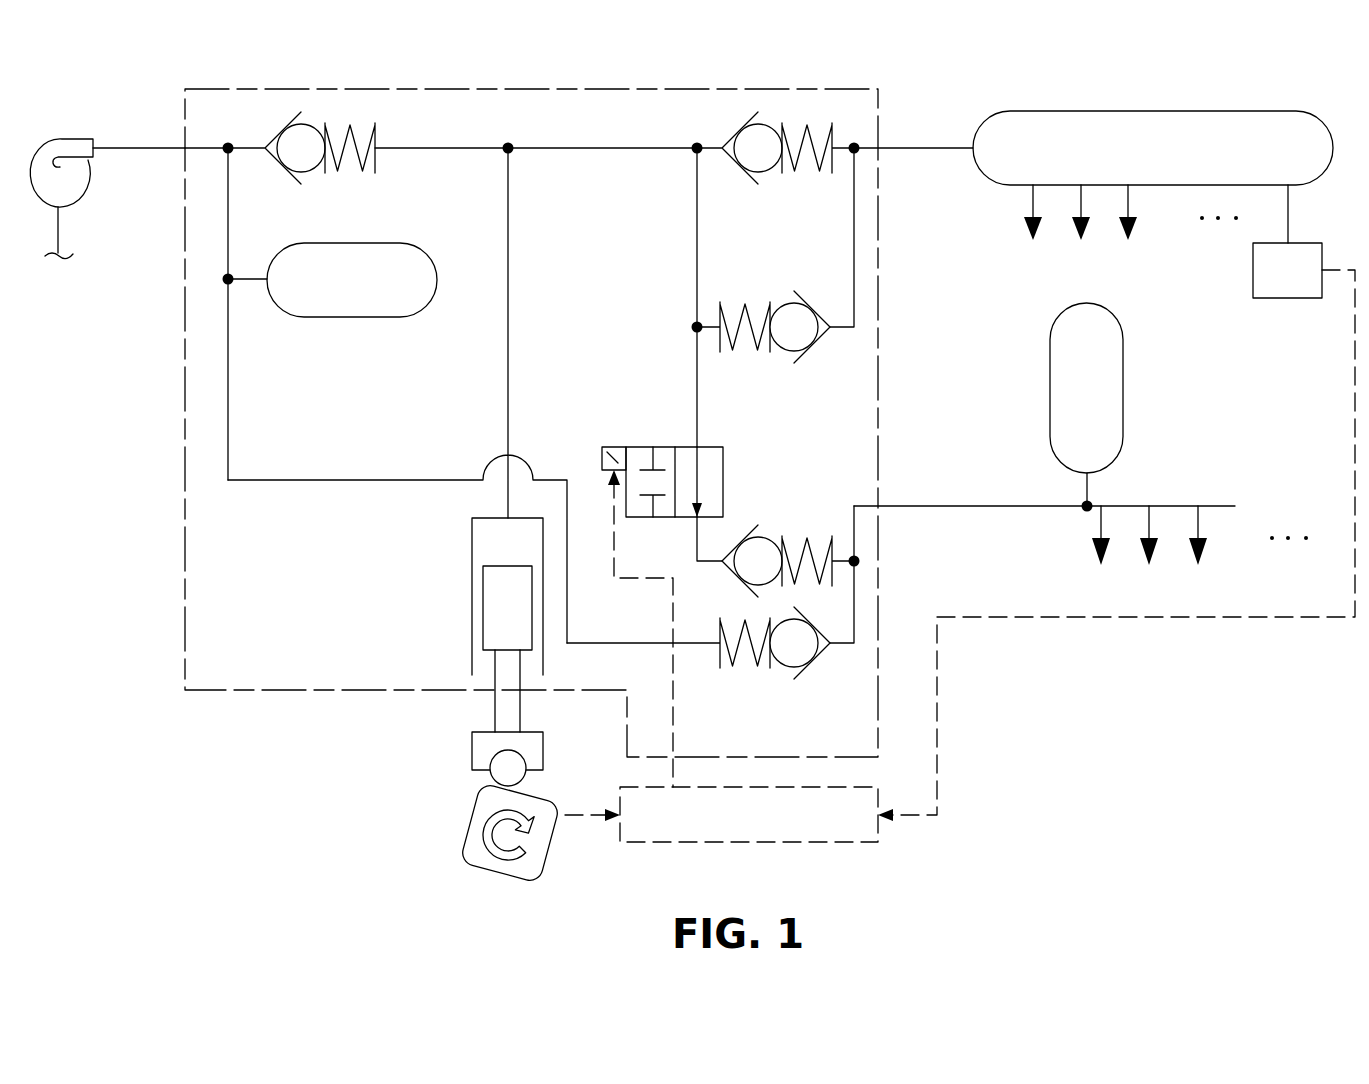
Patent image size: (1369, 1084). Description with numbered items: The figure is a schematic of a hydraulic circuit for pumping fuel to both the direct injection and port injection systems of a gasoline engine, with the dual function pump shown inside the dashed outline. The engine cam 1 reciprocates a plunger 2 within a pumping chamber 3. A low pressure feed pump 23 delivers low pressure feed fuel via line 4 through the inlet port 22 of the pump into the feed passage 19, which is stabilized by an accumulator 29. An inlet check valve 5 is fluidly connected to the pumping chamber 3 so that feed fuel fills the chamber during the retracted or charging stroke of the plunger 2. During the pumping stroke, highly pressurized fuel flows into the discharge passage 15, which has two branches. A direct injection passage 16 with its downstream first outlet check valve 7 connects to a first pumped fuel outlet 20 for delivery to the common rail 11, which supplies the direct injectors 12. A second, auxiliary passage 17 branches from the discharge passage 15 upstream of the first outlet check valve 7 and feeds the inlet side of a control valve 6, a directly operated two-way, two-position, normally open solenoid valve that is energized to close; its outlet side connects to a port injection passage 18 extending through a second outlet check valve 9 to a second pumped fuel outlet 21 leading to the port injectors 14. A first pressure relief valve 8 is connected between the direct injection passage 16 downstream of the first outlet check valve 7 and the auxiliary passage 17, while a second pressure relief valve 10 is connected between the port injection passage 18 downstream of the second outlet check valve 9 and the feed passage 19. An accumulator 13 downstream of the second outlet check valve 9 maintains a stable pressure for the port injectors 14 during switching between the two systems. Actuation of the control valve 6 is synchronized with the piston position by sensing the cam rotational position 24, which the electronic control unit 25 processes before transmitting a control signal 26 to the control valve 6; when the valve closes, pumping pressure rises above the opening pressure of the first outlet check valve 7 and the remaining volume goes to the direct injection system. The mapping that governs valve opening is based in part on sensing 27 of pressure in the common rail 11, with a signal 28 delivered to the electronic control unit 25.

The engine cam 1 is at (463, 828).
The plunger 2 is at (497, 632).
The pumping chamber 3 is at (483, 528).
The line 4 is at (125, 150).
The inlet check valve 5 is at (290, 175).
The control valve 6 is at (640, 447).
The first outlet check valve 7 is at (748, 183).
The first pressure relief valve 8 is at (800, 360).
The second outlet check valve 9 is at (748, 528).
The second pressure relief valve 10 is at (800, 672).
The common rail 11 is at (1085, 111).
The direct injectors 12 is at (1030, 205).
The accumulator 13 is at (1123, 388).
The port injectors 14 is at (1100, 528).
The discharge passage 15 is at (545, 148).
The direct injection passage 16 is at (712, 143).
The auxiliary passage 17 is at (697, 260).
The port injection passage 18 is at (697, 541).
The feed passage 19 is at (253, 140).
The first pumped fuel outlet 20 is at (880, 148).
The second pumped fuel outlet 21 is at (880, 505).
The inlet port 22 is at (183, 148).
The low pressure feed pump 23 is at (68, 139).
The cam rotational position 24 is at (583, 812).
The electronic control unit 25 is at (793, 842).
The control signal 26 is at (673, 620).
The sensing of pressure 27 is at (1300, 243).
The signal 28 is at (1355, 412).
The accumulator 29 is at (335, 318).